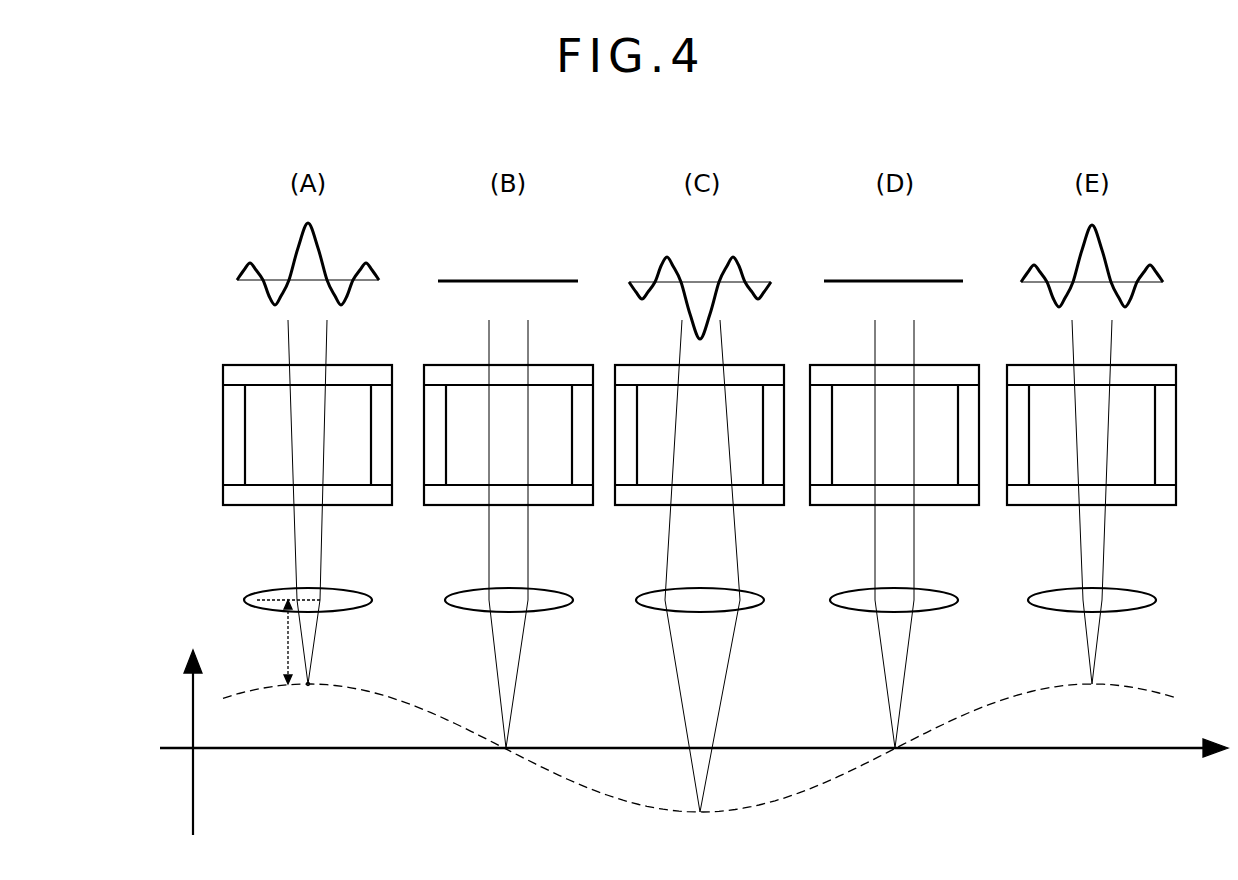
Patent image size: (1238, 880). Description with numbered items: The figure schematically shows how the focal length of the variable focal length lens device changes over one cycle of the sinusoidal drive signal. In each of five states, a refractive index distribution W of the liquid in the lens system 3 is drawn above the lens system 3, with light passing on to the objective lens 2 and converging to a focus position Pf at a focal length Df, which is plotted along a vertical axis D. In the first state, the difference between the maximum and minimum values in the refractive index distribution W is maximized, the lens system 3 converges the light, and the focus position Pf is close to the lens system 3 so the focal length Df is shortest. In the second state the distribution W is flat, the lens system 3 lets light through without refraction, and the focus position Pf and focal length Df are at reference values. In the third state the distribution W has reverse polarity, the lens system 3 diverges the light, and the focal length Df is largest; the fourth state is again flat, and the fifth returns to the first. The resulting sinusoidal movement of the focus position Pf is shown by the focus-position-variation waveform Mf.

The objective lens 2 is at (240, 594).
The lens system 3 is at (205, 358).
The refractive index distribution W is at (248, 263).
The focal length Df is at (286, 642).
The focus position Pf is at (312, 682).
The focus-position-variation waveform Mf is at (1023, 691).
The displacement axis D is at (178, 742).